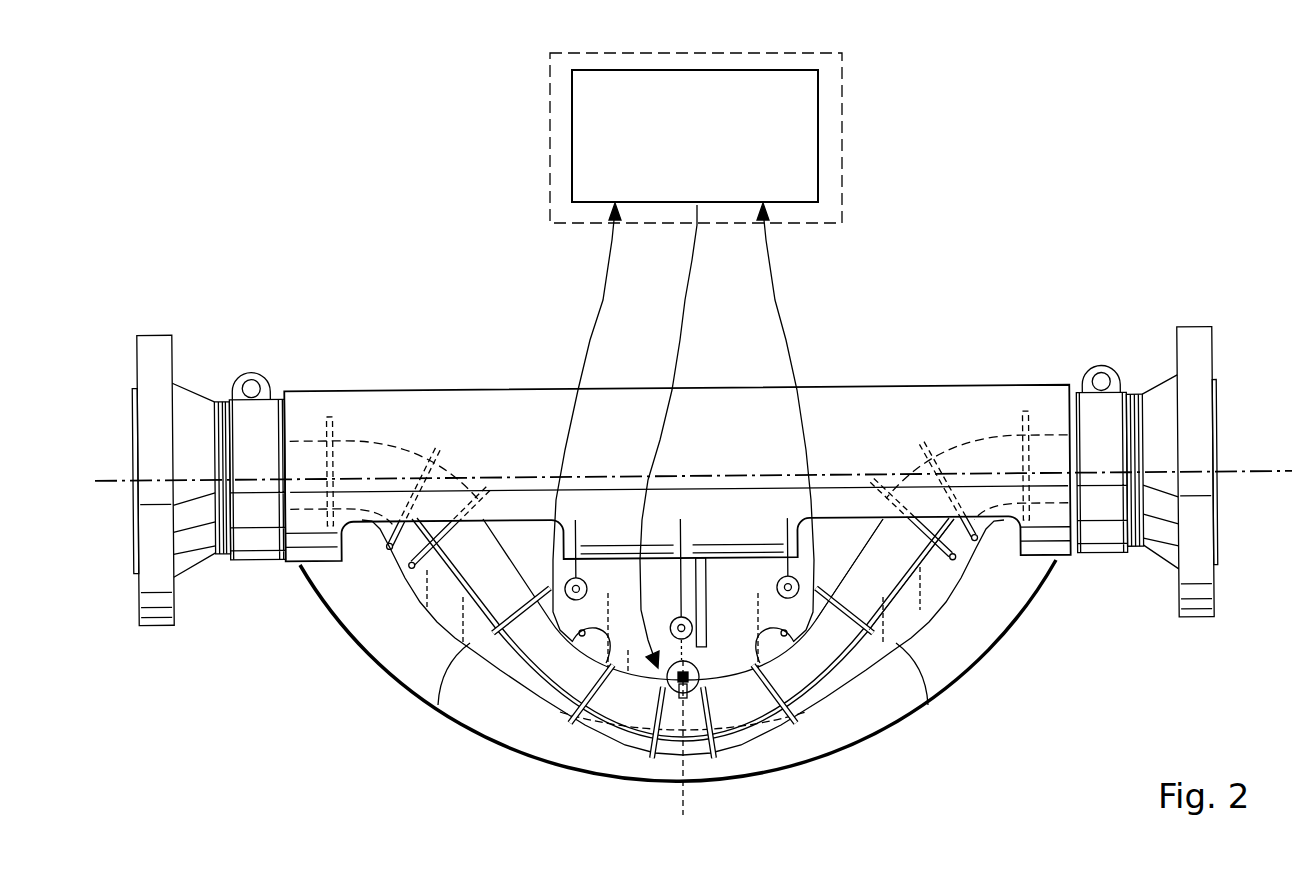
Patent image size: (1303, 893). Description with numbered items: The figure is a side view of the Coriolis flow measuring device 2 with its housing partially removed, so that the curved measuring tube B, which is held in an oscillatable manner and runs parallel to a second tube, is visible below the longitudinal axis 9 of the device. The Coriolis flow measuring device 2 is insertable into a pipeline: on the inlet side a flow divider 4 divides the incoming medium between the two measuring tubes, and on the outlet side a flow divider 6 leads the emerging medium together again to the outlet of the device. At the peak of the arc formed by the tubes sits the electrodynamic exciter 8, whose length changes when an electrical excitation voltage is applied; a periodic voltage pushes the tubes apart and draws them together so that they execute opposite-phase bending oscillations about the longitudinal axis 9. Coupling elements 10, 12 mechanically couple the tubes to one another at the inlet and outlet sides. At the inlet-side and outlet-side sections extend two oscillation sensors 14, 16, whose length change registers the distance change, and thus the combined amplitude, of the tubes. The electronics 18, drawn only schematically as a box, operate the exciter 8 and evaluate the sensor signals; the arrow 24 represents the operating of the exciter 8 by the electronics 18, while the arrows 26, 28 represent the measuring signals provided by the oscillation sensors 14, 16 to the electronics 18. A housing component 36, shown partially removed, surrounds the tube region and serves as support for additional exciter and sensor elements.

The Coriolis flow measuring device 2 is at (1098, 178).
The flow divider 4 is at (250, 522).
The flow divider 6 is at (1107, 523).
The exciter 8 is at (693, 665).
The longitudinal axis 9 is at (1280, 478).
The coupling element 10 is at (372, 530).
The coupling element 12 is at (890, 518).
The oscillation sensor 14 is at (565, 708).
The oscillation sensor 16 is at (800, 660).
The electronics 18 is at (803, 163).
The arrow 24 is at (690, 303).
The arrow 26 is at (598, 318).
The arrow 28 is at (780, 318).
The housing component 36 is at (950, 665).
The measuring tube B is at (633, 707).